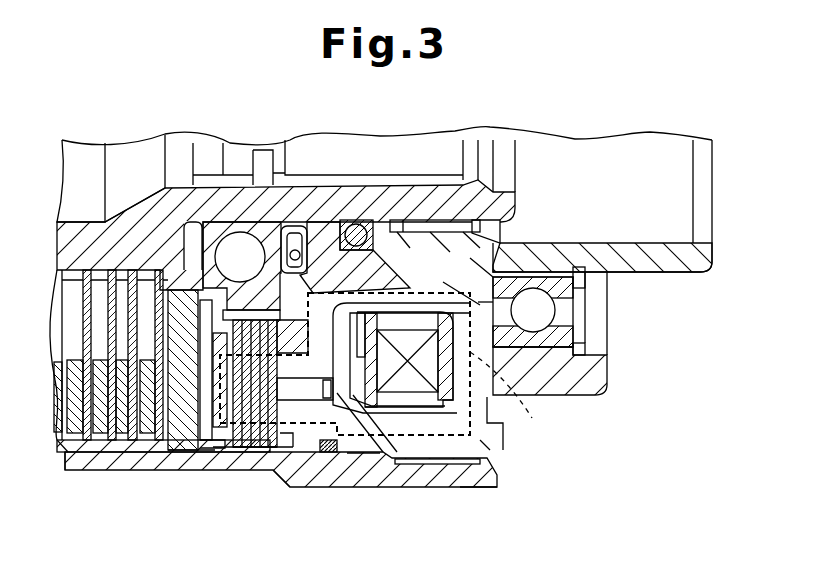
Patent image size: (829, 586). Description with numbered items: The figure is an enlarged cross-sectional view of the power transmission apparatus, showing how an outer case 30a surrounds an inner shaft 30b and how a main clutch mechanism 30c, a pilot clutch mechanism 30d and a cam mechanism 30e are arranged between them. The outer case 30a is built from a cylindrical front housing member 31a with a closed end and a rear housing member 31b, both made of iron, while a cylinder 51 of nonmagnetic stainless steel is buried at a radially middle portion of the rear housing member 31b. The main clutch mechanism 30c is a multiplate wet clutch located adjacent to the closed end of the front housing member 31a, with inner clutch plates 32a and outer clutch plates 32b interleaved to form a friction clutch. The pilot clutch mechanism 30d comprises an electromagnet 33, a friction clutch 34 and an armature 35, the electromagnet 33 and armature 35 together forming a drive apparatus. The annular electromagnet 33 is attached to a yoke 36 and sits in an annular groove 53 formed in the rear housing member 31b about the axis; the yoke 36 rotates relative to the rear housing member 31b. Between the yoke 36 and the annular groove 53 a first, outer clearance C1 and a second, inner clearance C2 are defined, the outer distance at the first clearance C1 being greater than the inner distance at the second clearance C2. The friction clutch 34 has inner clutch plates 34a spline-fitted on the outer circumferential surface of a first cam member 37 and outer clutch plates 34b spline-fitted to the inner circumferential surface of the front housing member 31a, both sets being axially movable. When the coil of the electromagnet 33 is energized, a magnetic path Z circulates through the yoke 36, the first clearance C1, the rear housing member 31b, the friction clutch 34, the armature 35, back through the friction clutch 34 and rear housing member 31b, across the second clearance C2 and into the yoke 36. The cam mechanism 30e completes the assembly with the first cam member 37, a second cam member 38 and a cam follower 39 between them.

The outer case 30a is at (500, 486).
The inner shaft 30b is at (369, 140).
The main clutch mechanism 30c is at (87, 457).
The pilot clutch mechanism 30d is at (353, 397).
The cam mechanism 30e is at (198, 251).
The front housing member 31a is at (472, 483).
The rear housing member 31b is at (330, 457).
The inner clutch plates 32a is at (121, 270).
The outer clutch plates 32b is at (122, 448).
The electromagnet 33 is at (413, 395).
The friction clutch 34 is at (282, 451).
The inner clutch plates 34a is at (312, 292).
The outer clutch plates 34b is at (254, 458).
The armature 35 is at (205, 450).
The yoke 36 is at (590, 388).
The first cam member 37 is at (275, 232).
The second cam member 38 is at (180, 415).
The cam follower 39 is at (241, 240).
The cylinder 51 is at (285, 402).
The annular groove 53 is at (400, 287).
The first clearance C1 is at (492, 432).
The second clearance C2 is at (482, 300).
The magnetic path Z is at (512, 394).